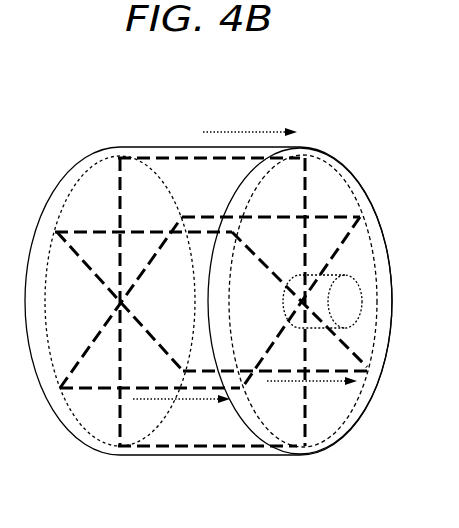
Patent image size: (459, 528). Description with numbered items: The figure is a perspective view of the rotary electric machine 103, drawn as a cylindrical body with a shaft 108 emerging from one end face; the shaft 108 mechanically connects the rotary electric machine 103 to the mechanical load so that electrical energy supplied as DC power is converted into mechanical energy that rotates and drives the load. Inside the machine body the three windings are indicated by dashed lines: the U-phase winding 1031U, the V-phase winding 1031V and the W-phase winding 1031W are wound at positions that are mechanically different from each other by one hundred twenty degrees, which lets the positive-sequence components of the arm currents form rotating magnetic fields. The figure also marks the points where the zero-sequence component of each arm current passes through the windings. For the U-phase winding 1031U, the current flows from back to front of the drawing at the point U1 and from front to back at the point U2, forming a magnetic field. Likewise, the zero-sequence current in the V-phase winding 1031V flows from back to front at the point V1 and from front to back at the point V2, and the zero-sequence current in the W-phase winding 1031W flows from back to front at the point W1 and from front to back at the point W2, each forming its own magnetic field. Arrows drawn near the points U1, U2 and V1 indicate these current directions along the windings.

The rotary electric machine 103 is at (317, 147).
The U-phase winding 1031U is at (337, 155).
The V-phase winding 1031V is at (362, 345).
The W-phase winding 1031W is at (95, 408).
The shaft 108 is at (350, 300).
The point U1 is at (187, 147).
The point U2 is at (192, 450).
The point V1 is at (330, 381).
The point V2 is at (97, 230).
The point W1 is at (75, 402).
The point W2 is at (352, 200).